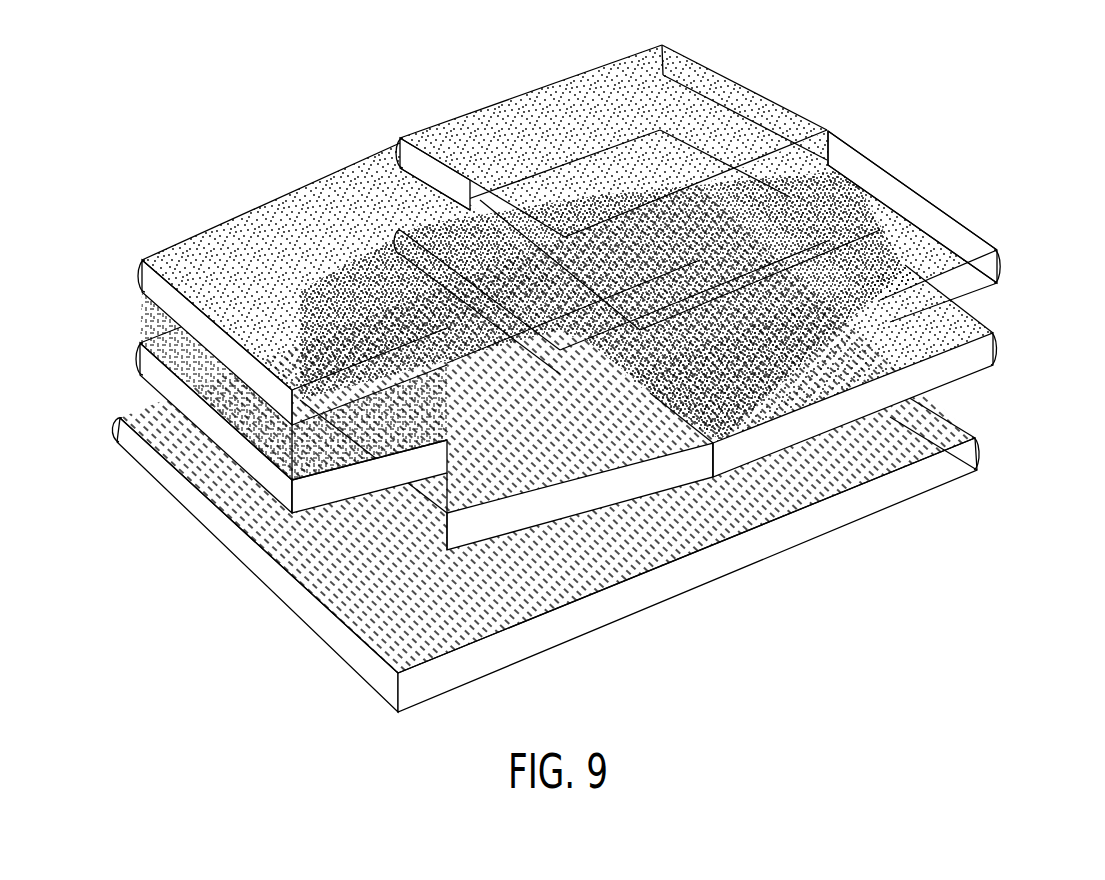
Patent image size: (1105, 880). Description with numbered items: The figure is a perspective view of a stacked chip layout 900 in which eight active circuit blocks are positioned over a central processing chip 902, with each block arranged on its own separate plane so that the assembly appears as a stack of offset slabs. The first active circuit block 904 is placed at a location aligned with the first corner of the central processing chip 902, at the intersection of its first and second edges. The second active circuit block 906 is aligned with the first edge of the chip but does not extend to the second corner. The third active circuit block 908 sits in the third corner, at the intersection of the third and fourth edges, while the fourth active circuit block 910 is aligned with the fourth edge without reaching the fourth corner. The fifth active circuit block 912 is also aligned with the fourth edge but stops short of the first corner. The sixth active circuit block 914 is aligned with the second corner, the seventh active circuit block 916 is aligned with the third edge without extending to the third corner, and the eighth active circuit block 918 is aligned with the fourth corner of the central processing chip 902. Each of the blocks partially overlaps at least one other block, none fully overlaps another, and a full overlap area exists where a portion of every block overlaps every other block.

The stacked chip layout 900 is at (224, 117).
The central processing chip 902 is at (978, 455).
The first active circuit block 904 is at (138, 356).
The second active circuit block 906 is at (778, 121).
The third active circuit block 908 is at (997, 348).
The fourth active circuit block 910 is at (447, 478).
The fifth active circuit block 912 is at (137, 272).
The sixth active circuit block 914 is at (733, 96).
The seventh active circuit block 916 is at (917, 192).
The eighth active circuit block 918 is at (288, 428).